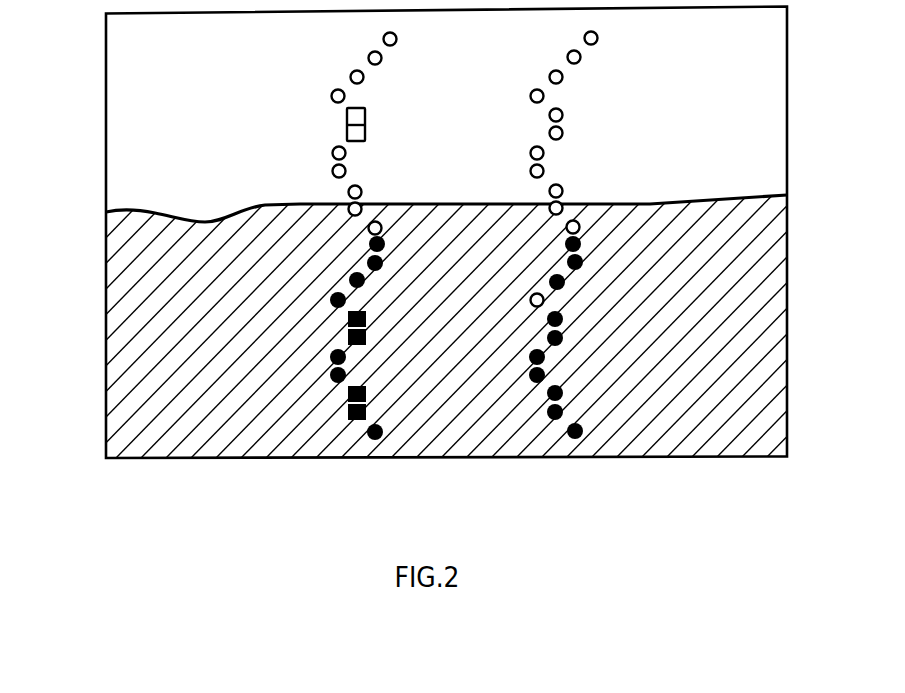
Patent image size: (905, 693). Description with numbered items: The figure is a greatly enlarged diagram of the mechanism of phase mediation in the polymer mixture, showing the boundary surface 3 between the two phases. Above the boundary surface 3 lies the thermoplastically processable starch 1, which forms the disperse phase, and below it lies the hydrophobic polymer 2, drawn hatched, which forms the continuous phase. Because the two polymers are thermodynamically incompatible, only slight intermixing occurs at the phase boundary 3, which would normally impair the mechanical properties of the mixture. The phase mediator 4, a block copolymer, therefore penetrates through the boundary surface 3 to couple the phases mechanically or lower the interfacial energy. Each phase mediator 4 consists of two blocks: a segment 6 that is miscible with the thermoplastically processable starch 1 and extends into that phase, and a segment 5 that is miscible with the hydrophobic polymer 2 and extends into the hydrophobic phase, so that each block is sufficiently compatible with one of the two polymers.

The thermoplastically processable starch 1 is at (153, 122).
The hydrophobic polymer 2 is at (153, 238).
The boundary surface 3 is at (683, 203).
The phase mediator 4 is at (358, 337).
The segment miscible with the hydrophobic polymer 5 is at (562, 318).
The segment miscible with the thermoplastically processable starch 6 is at (563, 114).